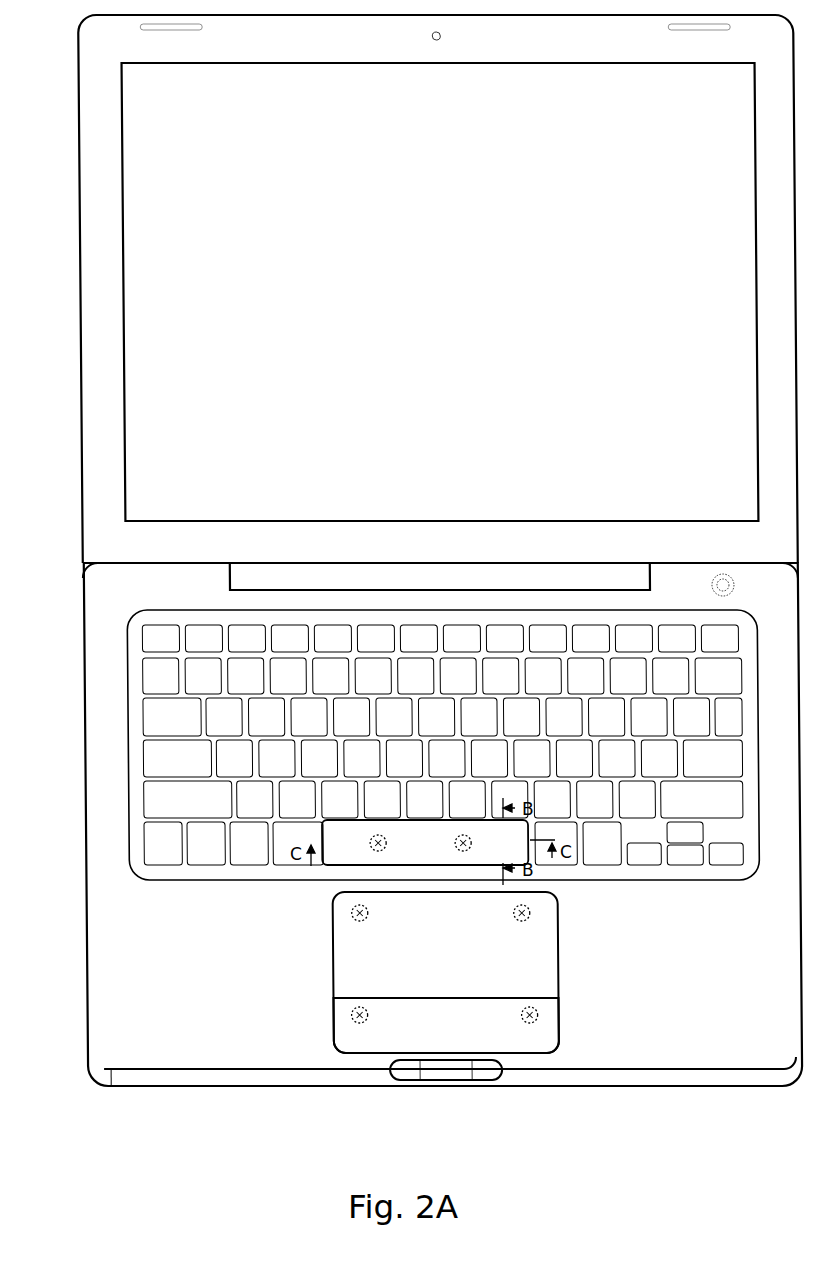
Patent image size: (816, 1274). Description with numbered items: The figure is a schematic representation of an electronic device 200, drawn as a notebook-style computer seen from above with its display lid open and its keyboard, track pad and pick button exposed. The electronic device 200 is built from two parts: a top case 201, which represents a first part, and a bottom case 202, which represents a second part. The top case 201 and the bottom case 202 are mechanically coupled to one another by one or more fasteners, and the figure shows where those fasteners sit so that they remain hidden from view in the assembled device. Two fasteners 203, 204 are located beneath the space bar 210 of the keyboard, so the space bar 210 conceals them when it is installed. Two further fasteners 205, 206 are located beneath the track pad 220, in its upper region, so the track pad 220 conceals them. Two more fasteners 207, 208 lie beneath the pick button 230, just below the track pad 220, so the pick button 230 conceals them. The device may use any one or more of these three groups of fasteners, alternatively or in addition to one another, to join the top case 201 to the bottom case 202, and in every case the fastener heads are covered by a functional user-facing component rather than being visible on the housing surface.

The electronic device 200 is at (672, 1098).
The top case 201 is at (287, 1057).
The bottom case 202 is at (320, 1077).
The fastener 203 is at (370, 841).
The fastener 204 is at (455, 840).
The fastener 205 is at (353, 916).
The fastener 206 is at (514, 915).
The fastener 207 is at (363, 1023).
The fastener 208 is at (527, 1022).
The space bar 210 is at (345, 848).
The track pad 220 is at (347, 980).
The pick button 230 is at (548, 1032).